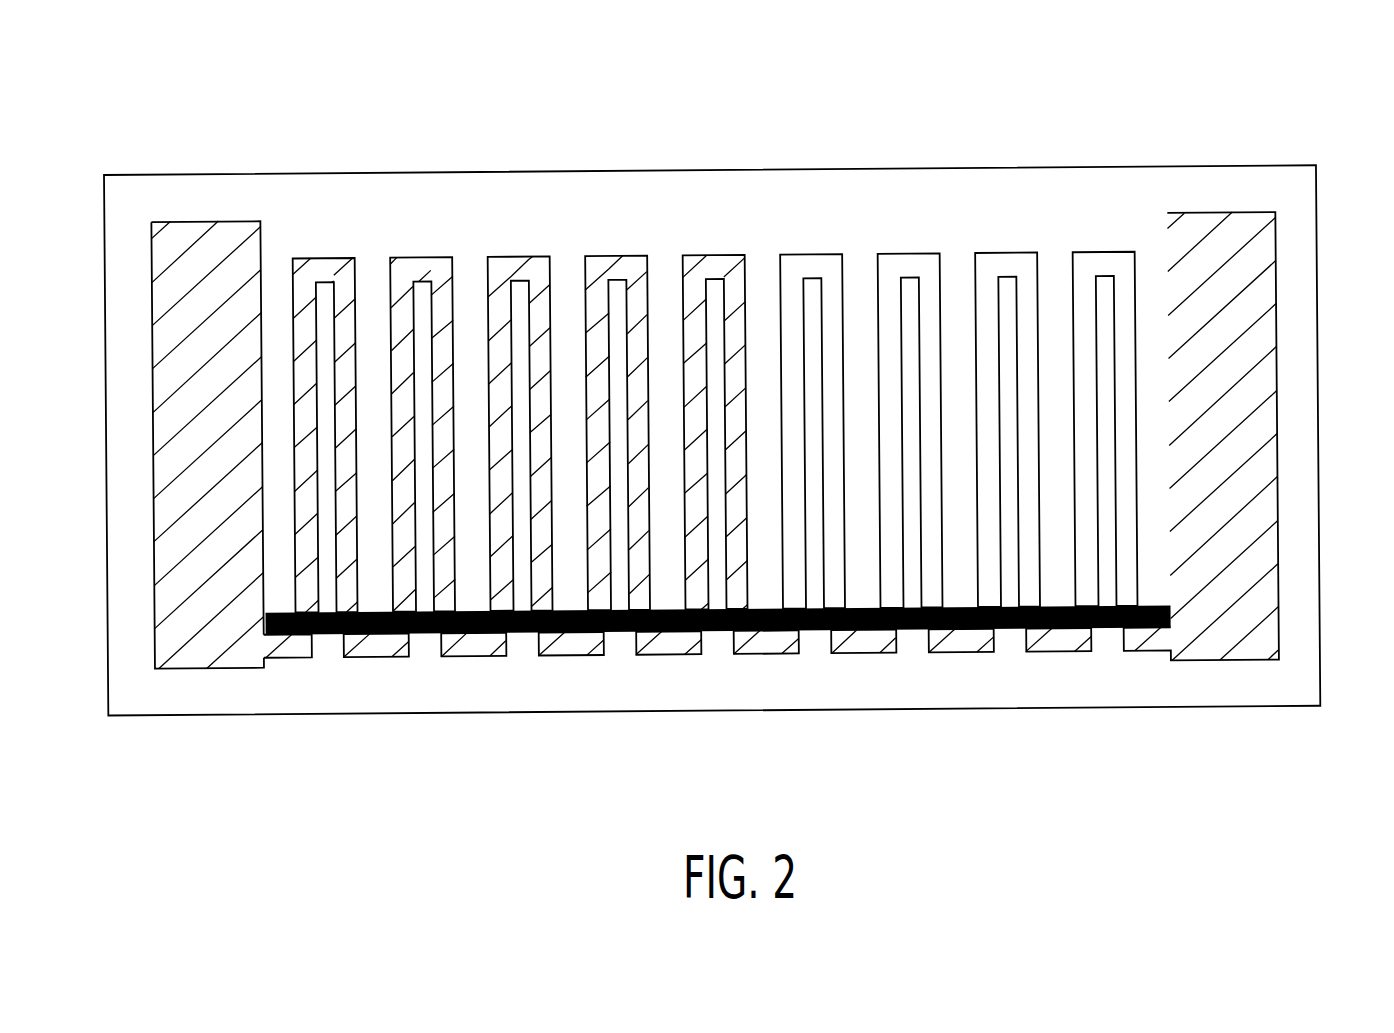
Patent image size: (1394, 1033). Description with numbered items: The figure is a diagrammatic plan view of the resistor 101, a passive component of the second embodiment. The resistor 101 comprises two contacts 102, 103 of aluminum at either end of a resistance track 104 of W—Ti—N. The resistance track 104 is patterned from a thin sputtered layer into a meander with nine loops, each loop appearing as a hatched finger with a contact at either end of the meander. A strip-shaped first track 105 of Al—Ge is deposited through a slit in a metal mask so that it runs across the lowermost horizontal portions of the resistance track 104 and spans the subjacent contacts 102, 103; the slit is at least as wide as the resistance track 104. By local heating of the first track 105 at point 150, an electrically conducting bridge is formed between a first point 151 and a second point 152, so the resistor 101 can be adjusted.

The resistor 101 is at (1318, 130).
The contact 102 is at (218, 657).
The contact 103 is at (1225, 648).
The resistance track 104 is at (328, 259).
The first track 105 is at (617, 636).
The point 150 is at (322, 612).
The first point 151 is at (300, 648).
The second point 152 is at (377, 648).